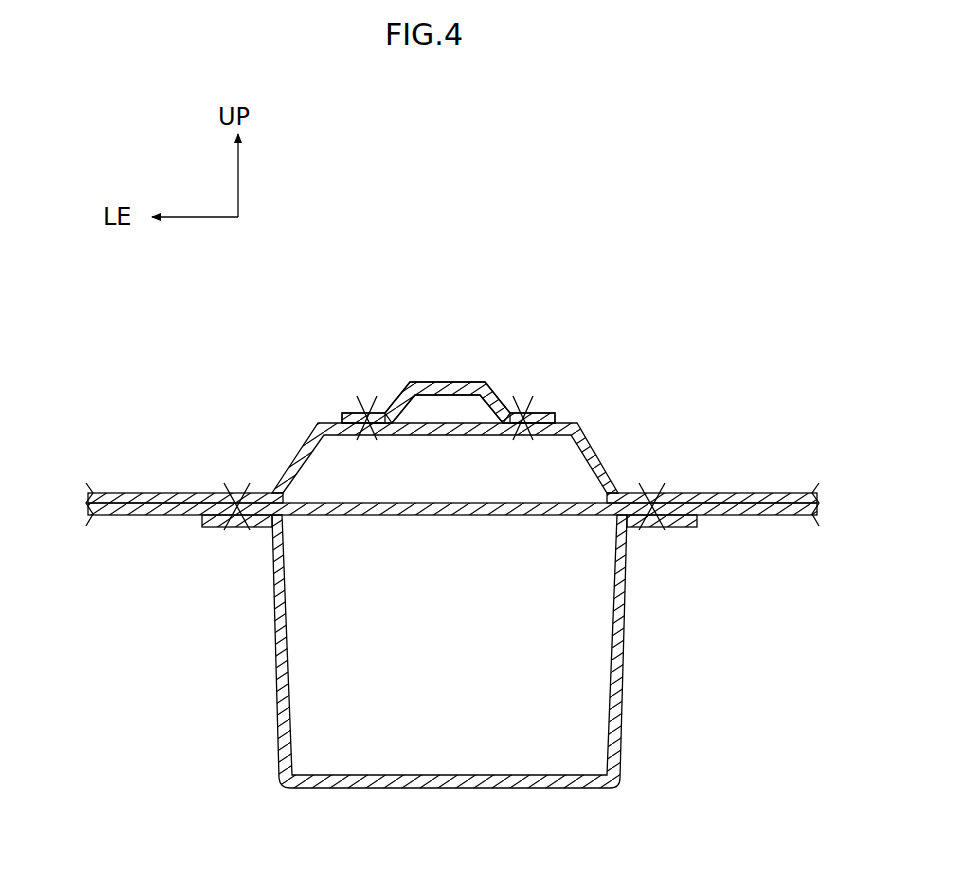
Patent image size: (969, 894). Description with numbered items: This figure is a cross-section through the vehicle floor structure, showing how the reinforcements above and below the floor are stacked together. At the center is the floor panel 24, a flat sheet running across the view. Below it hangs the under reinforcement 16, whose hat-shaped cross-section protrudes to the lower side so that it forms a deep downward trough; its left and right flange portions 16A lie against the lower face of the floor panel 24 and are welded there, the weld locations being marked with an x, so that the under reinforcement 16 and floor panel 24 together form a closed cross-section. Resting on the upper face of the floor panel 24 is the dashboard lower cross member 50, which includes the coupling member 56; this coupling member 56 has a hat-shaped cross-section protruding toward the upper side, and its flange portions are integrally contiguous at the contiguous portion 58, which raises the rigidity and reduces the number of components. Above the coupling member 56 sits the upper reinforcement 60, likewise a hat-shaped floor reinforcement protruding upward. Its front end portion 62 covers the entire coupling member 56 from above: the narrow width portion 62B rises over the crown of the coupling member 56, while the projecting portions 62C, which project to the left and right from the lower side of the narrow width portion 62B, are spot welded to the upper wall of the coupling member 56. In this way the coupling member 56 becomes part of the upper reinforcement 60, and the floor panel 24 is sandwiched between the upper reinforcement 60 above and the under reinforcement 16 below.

The under reinforcement 16 is at (447, 791).
The flange portions 16A is at (237, 531).
The floor panel 24 is at (130, 518).
The dashboard lower cross member 50 is at (738, 490).
The coupling member 56 is at (603, 452).
The contiguous portion 58 is at (162, 491).
The upper reinforcement 60 is at (444, 350).
The front end portion 62 is at (431, 379).
The narrow width portion 62B is at (483, 383).
The projecting portions 62C is at (355, 411).